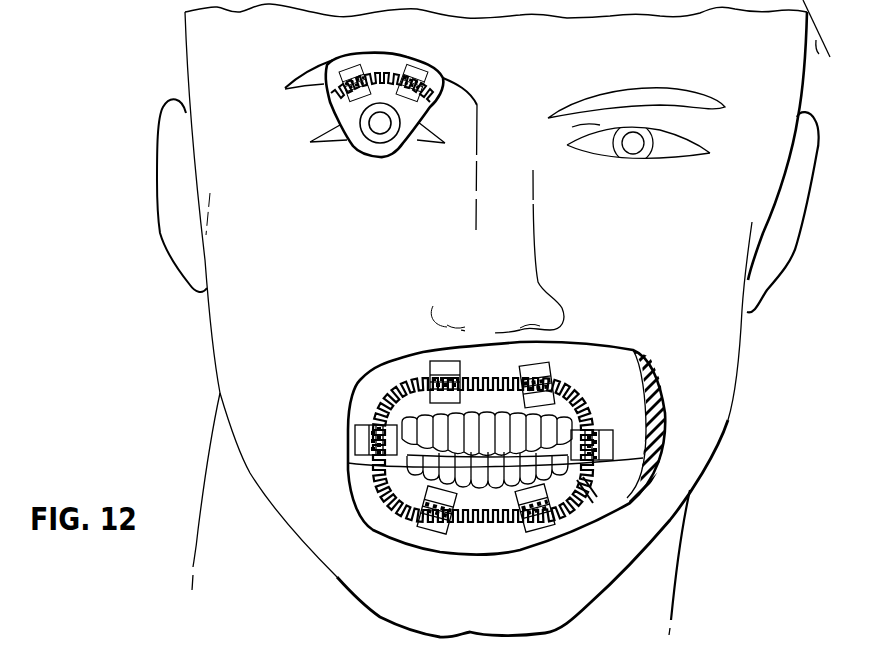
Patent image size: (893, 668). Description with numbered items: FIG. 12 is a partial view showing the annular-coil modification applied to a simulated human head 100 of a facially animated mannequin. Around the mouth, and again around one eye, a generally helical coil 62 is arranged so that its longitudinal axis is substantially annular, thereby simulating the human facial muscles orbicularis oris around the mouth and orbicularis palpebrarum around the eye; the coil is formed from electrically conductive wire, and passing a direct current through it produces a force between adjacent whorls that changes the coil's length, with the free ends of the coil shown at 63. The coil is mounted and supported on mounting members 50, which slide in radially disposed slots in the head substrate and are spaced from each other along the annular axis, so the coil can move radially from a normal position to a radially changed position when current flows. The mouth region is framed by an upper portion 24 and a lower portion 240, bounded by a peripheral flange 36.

The patient's head 100 is at (739, 432).
The applicator shell 24 is at (623, 392).
The lower applicator portion 240 is at (398, 520).
The peripheral flange 36 is at (663, 386).
The toothed rack strip 62 is at (390, 385).
The rack strip ends 63 is at (606, 532).
The bracket actuator 50 is at (348, 64).